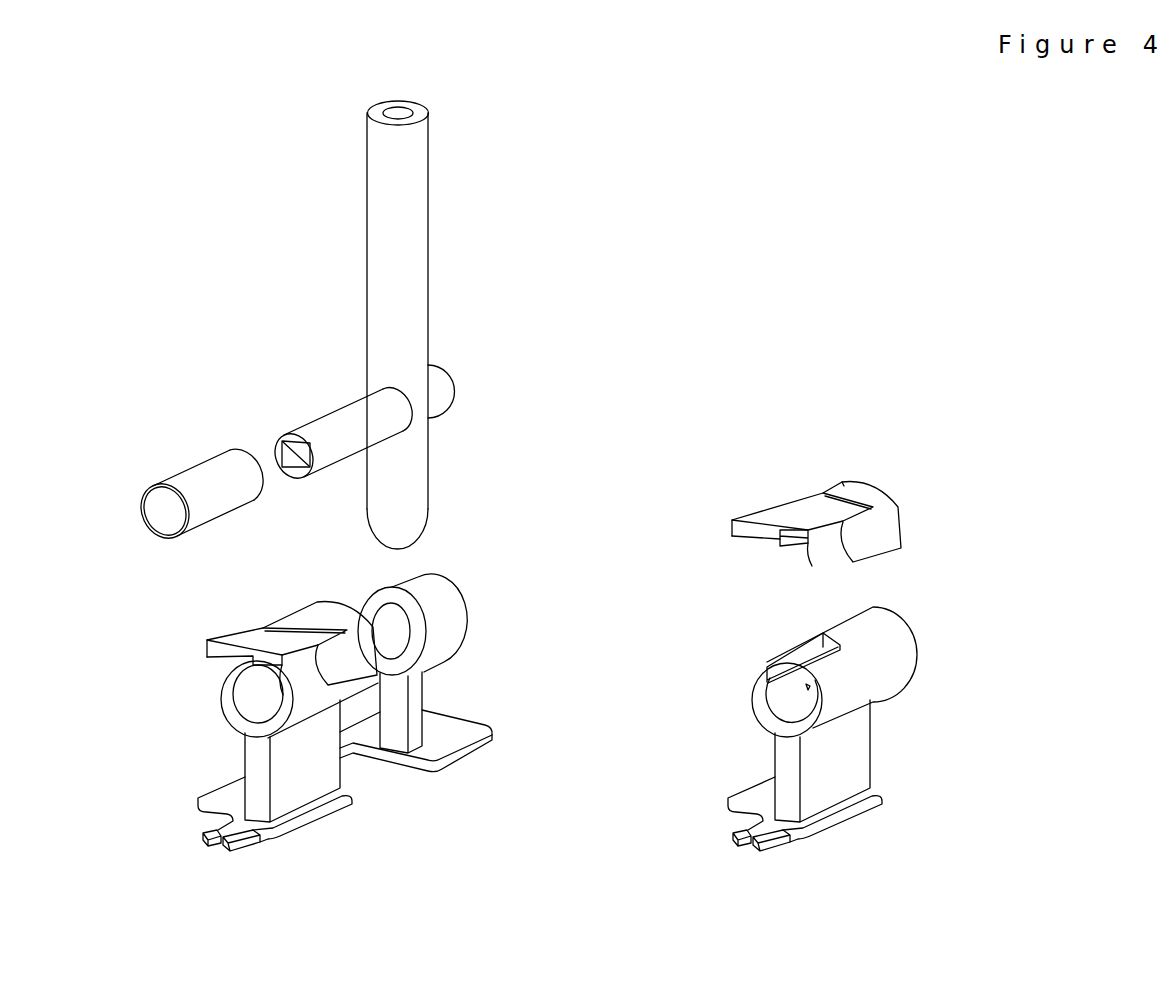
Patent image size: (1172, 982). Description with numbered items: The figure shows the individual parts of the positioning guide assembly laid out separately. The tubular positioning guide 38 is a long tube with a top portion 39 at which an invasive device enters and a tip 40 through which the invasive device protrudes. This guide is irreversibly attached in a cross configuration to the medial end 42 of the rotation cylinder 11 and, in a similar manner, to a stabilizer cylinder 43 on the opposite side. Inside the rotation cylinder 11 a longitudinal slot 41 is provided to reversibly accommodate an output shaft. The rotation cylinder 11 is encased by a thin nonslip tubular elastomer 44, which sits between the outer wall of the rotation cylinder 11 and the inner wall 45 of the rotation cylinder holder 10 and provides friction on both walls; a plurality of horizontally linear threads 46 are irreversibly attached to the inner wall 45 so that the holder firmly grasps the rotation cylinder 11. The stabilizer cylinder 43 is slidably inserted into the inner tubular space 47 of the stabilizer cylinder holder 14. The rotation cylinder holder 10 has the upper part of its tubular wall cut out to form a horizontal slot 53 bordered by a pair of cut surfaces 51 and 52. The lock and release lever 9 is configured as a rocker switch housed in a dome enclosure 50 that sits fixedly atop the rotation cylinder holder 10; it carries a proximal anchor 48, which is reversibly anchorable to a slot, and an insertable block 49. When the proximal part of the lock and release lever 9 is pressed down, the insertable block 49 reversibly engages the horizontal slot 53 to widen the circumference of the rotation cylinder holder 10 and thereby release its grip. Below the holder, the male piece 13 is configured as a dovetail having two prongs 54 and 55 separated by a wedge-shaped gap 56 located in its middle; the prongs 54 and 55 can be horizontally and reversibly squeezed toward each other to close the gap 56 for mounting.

The lock and release lever 9 is at (801, 520).
The rotation cylinder holder 10 is at (327, 761).
The rotation cylinder 11 is at (286, 394).
The male piece 13 is at (822, 740).
The stabilizer cylinder holder 14 is at (436, 624).
The tubular positioning guide 38 is at (355, 311).
The top portion 39 is at (355, 111).
The tip 40 is at (441, 499).
The longitudinal slot 41 is at (325, 470).
The medial end 42 is at (340, 415).
The stabilizer cylinder 43 is at (472, 375).
The thin nonslip tubular elastomer 44 is at (169, 497).
The inner wall 45 is at (228, 699).
The horizontally linear threads 46 is at (270, 654).
The inner tubular space 47 is at (443, 613).
The proximal anchor 48 is at (746, 547).
The insertable block 49 is at (863, 568).
The dome enclosure 50 is at (807, 467).
The cut surface 51 is at (752, 686).
The cut surface 52 is at (862, 709).
The horizontal slot 53 is at (781, 650).
The prong 54 is at (715, 855).
The prong 55 is at (720, 870).
The wedge-shaped gap 56 is at (730, 827).